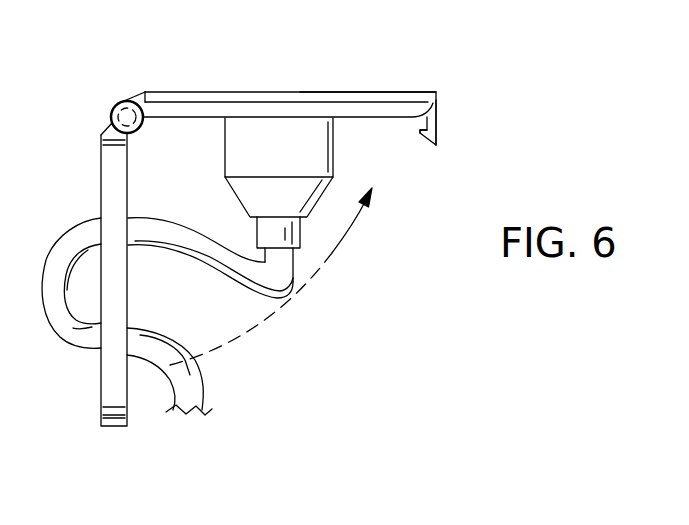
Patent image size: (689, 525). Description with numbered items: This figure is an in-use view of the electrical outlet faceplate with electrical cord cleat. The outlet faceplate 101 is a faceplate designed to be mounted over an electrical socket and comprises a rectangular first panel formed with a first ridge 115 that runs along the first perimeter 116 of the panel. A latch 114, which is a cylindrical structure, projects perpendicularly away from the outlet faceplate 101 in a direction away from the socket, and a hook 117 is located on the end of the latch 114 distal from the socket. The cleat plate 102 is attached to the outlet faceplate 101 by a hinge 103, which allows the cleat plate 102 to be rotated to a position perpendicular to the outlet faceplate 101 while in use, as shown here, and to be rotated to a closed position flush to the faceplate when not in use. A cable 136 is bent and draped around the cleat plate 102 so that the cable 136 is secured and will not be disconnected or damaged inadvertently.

The outlet faceplate 101 is at (238, 105).
The cleat plate 102 is at (113, 420).
The hinge 103 is at (127, 107).
The latch 114 is at (428, 122).
The first ridge 115 is at (308, 101).
The first perimeter 116 is at (398, 92).
The hook 117 is at (420, 134).
The cable 136 is at (77, 240).